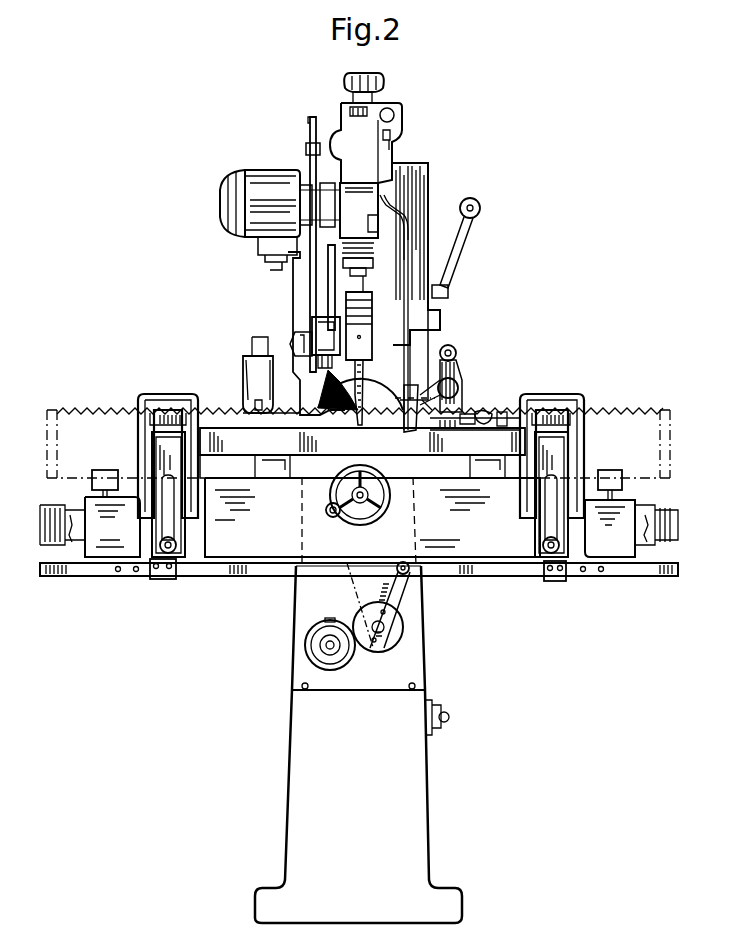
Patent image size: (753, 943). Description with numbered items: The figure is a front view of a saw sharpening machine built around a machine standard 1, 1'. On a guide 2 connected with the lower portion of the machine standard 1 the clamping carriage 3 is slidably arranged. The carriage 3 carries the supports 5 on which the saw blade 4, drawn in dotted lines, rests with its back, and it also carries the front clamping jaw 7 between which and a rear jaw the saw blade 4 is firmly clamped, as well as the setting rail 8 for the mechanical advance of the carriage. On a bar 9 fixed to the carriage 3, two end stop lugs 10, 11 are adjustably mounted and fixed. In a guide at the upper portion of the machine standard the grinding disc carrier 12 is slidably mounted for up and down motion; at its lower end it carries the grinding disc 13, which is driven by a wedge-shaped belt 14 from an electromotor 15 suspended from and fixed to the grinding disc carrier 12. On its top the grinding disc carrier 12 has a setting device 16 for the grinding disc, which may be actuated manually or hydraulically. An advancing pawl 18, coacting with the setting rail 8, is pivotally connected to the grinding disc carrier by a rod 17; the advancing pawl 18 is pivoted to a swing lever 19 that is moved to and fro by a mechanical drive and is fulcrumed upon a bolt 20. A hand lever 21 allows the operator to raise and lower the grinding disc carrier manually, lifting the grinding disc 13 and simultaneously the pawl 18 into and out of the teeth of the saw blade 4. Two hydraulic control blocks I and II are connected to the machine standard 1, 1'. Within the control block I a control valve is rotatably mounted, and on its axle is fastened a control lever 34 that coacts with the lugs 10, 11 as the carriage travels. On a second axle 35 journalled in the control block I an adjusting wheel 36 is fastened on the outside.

The machine standard 1 is at (358, 700).
The machine standard 1' is at (294, 333).
The guide 2 is at (80, 508).
The carriage 3 is at (237, 550).
The saw blade 4 is at (73, 436).
The supports 5 is at (104, 478).
The front clamping jaw 7 is at (170, 440).
The setting rail 8 is at (498, 438).
The bar 9 is at (88, 568).
The end stop lug 10 is at (160, 578).
The end stop lug 11 is at (556, 580).
The grinding disc carrier 12 is at (358, 198).
The grinding disc 13 is at (356, 384).
The wedge-shaped belt 14 is at (332, 255).
The electromotor 15 is at (262, 192).
The setting device 16 is at (390, 110).
The rod 17 is at (412, 333).
The advancing pawl 18 is at (418, 395).
The swing lever 19 is at (458, 384).
The bolt 20 is at (456, 354).
The hand lever 21 is at (456, 238).
The control lever 34 is at (405, 600).
The second axle 35 is at (328, 650).
The adjusting wheel 36 is at (312, 632).
The hydraulic control block I is at (405, 668).
The hydraulic control block II is at (410, 162).